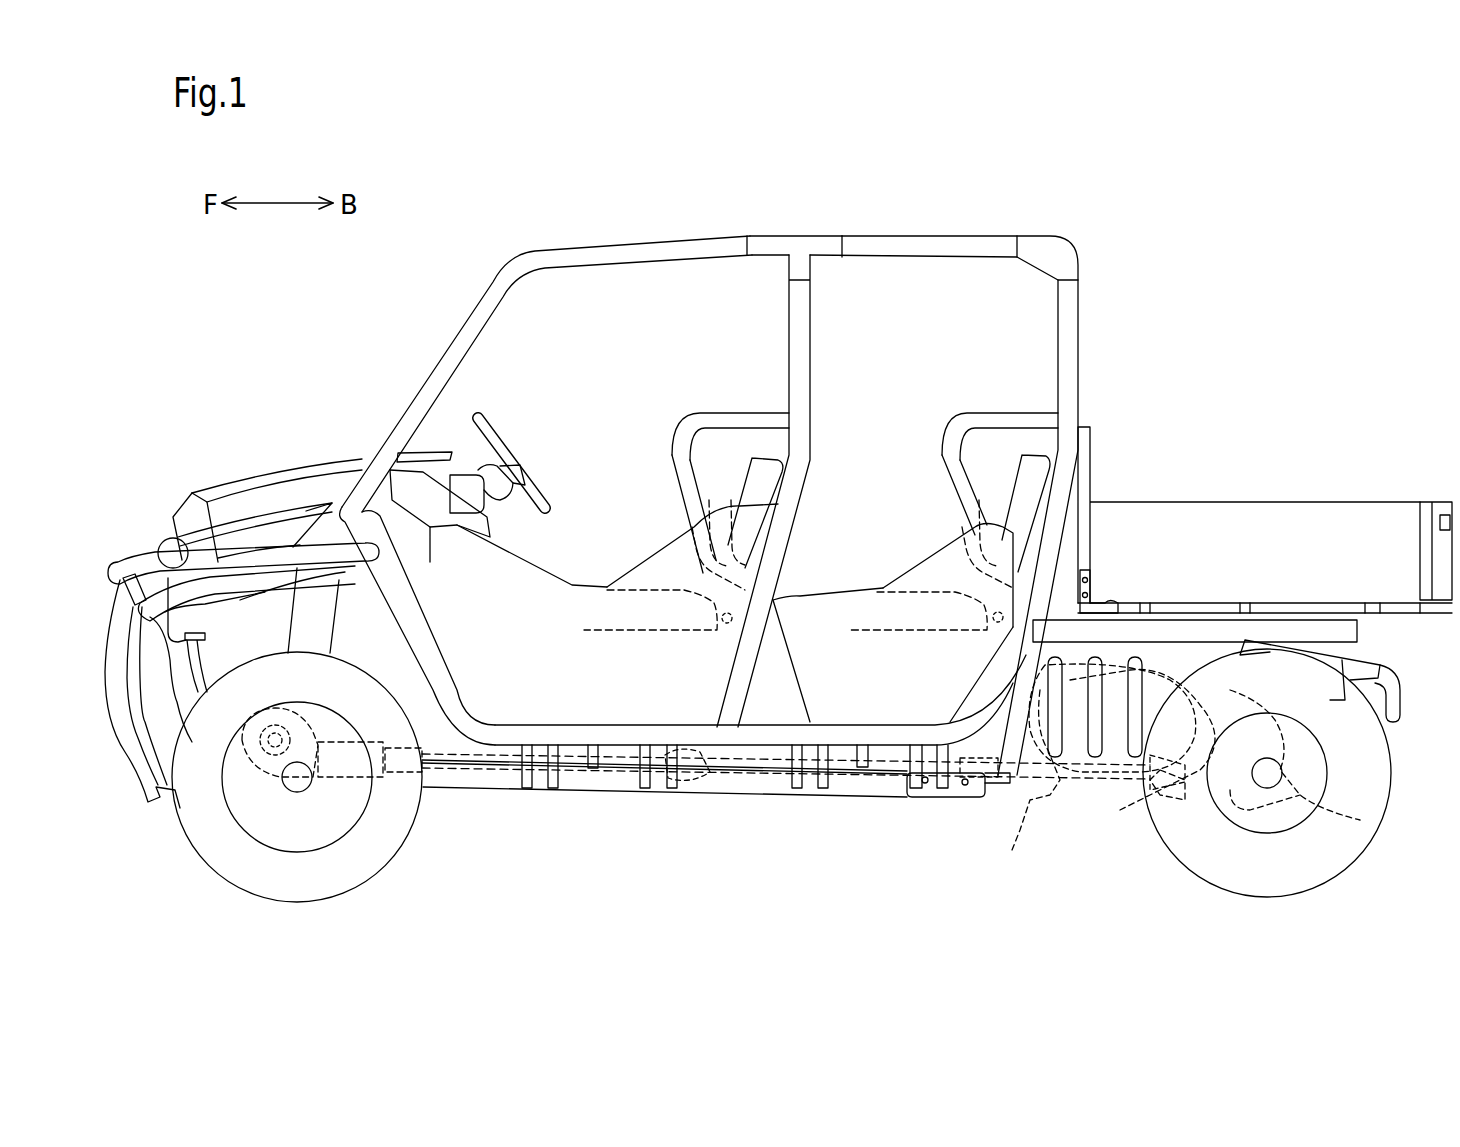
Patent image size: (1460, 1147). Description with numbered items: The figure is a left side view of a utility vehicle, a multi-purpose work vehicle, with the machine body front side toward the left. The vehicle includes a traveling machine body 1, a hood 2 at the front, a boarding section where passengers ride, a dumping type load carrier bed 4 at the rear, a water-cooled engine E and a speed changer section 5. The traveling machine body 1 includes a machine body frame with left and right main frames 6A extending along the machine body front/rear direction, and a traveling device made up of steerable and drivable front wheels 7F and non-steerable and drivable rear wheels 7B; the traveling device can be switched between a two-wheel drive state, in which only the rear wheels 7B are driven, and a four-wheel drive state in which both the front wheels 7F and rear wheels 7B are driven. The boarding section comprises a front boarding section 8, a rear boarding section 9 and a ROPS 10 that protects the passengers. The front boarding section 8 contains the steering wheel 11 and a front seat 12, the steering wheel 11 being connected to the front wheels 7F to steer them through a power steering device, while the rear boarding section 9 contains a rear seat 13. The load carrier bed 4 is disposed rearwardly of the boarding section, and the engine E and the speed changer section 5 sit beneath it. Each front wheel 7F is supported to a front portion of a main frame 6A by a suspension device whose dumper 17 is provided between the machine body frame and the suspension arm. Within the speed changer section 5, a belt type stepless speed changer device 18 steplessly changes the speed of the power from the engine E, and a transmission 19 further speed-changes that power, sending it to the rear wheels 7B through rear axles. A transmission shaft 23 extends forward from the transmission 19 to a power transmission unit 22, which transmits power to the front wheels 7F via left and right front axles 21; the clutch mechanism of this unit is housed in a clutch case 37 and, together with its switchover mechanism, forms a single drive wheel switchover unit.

The traveling machine body 1 is at (180, 852).
The hood 2 is at (238, 487).
The load carrier bed 4 is at (1272, 510).
The speed changer section 5 is at (1190, 815).
The main frame 6A is at (845, 800).
The front wheel 7F is at (296, 892).
The rear wheel 7B is at (1315, 878).
The front boarding section 8 is at (622, 233).
The rear boarding section 9 is at (930, 233).
The ROPS 10 is at (565, 258).
The steering wheel 11 is at (505, 450).
The front seat 12 is at (745, 462).
The rear seat 13 is at (1020, 462).
The dumper 17 is at (311, 580).
The belt type stepless speed changer device 18 is at (1035, 772).
The transmission 19 is at (1300, 795).
The front axle 21 is at (293, 722).
The power transmission unit 22 is at (275, 773).
The transmission shaft 23 is at (742, 782).
The clutch case 37 is at (350, 777).
The engine E is at (1073, 660).